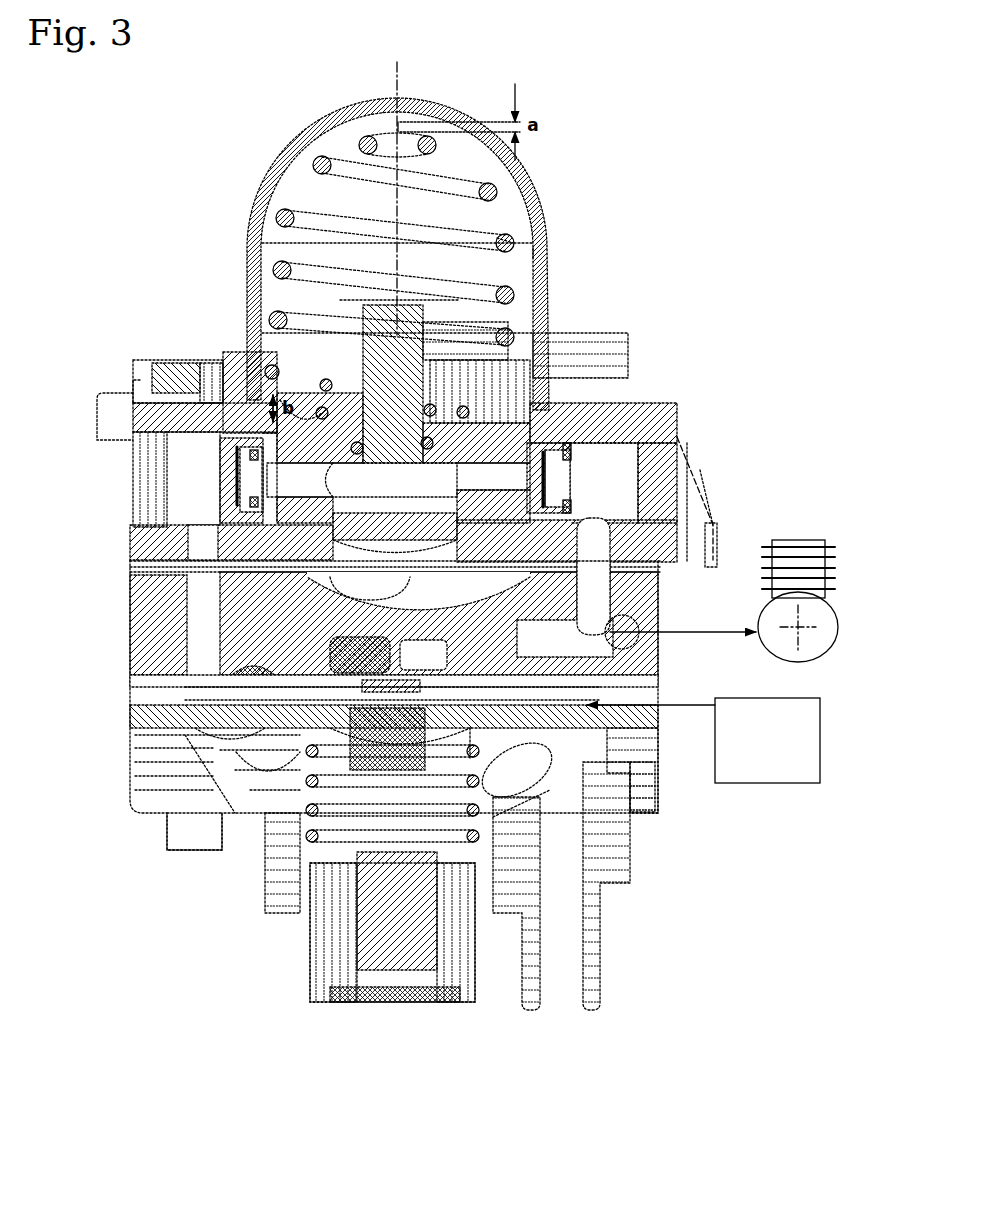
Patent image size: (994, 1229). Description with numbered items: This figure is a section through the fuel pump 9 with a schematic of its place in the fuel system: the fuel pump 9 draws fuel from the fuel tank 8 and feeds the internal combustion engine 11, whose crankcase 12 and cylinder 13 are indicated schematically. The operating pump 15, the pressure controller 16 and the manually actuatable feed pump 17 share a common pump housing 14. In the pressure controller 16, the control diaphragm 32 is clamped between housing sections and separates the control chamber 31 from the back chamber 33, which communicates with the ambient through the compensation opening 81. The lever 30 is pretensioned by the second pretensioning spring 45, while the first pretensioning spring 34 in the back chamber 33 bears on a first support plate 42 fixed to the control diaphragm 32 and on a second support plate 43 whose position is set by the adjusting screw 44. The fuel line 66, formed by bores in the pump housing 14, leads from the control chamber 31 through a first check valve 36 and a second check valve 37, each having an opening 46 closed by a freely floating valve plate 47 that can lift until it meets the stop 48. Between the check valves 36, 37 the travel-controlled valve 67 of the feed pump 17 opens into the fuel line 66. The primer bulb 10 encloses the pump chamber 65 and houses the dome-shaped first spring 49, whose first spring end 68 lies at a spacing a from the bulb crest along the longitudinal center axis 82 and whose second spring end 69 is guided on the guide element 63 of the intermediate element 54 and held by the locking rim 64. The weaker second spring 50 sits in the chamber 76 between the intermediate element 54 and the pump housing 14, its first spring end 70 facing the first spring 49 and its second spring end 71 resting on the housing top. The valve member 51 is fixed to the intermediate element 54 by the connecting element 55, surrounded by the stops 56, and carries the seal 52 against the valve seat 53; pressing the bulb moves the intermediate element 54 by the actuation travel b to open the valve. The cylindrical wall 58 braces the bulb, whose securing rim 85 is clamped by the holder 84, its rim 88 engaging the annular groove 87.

The fuel tank 8 is at (735, 776).
The fuel pump 9 is at (705, 303).
The primer bulb 10 is at (540, 262).
The internal combustion engine 11 is at (740, 569).
The crankcase 12 is at (820, 616).
The cylinder 13 is at (797, 548).
The pump housing 14 is at (150, 665).
The operating pump 15 is at (318, 567).
The pressure controller 16 is at (200, 758).
The feed pump 17 is at (548, 210).
The lever 30 is at (355, 687).
The control chamber 31 is at (590, 691).
The control diaphragm 32 is at (195, 728).
The back chamber 33 is at (560, 783).
The first pretensioning spring 34 is at (310, 808).
The first check valve 36 is at (218, 451).
The second check valve 37 is at (570, 443).
The first support plate 42 is at (295, 754).
The second support plate 43 is at (330, 842).
The adjusting screw 44 is at (375, 945).
The second pretensioning spring 45 is at (335, 657).
The opening 46 is at (240, 484).
The valve plate 47 is at (237, 476).
The stop 48 is at (254, 501).
The first spring 49 is at (513, 242).
The second spring 50 is at (482, 387).
The valve member 51 is at (340, 438).
The seal 52 is at (300, 398).
The valve seat 53 is at (330, 410).
The intermediate element 54 is at (370, 342).
The connecting element 55 is at (400, 326).
The stops 56 is at (440, 316).
The cylindrical wall 58 is at (197, 372).
The guide element 63 is at (488, 352).
The locking rim 64 is at (500, 360).
The pump chamber 65 is at (497, 176).
The fuel line 66 is at (200, 547).
The travel-controlled valve 67 is at (442, 440).
The first spring end 68 is at (403, 135).
The second spring end 69 is at (512, 367).
The first spring end 70 is at (355, 444).
The second spring end 71 is at (187, 402).
The chamber 76 is at (257, 380).
The compensation opening 81 is at (558, 1012).
The longitudinal center axis 82 is at (393, 74).
The holder 84 is at (187, 407).
The securing rim 85 is at (200, 414).
The annular groove 87 is at (195, 425).
The rim 88 is at (200, 432).